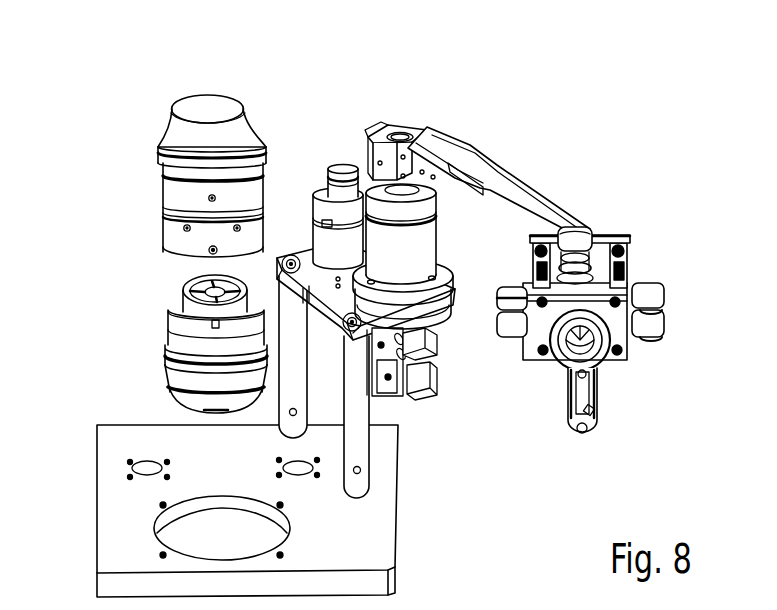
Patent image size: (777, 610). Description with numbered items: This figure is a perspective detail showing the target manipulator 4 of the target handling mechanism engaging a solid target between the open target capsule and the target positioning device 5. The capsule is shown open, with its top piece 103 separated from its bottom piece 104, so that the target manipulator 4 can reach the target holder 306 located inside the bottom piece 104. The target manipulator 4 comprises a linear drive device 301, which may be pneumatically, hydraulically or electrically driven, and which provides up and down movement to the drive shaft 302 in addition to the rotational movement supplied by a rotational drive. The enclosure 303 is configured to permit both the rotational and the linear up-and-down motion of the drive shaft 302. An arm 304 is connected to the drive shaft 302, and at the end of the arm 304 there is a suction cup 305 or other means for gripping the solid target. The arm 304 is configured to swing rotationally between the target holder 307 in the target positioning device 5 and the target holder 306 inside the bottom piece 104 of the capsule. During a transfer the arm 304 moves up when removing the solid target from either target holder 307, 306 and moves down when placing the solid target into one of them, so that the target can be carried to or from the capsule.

The target manipulator 4 is at (540, 60).
The target positioning device 5 is at (587, 355).
The top piece of target capsule 103 is at (237, 198).
The bottom piece of target capsule 104 is at (235, 347).
The linear drive device 301 is at (350, 170).
The drive shaft 302 is at (403, 188).
The enclosure 303 is at (403, 247).
The arm 304 is at (553, 210).
The suction cup 305 is at (598, 222).
The target holder 306 is at (630, 258).
The target holder 307 is at (663, 322).